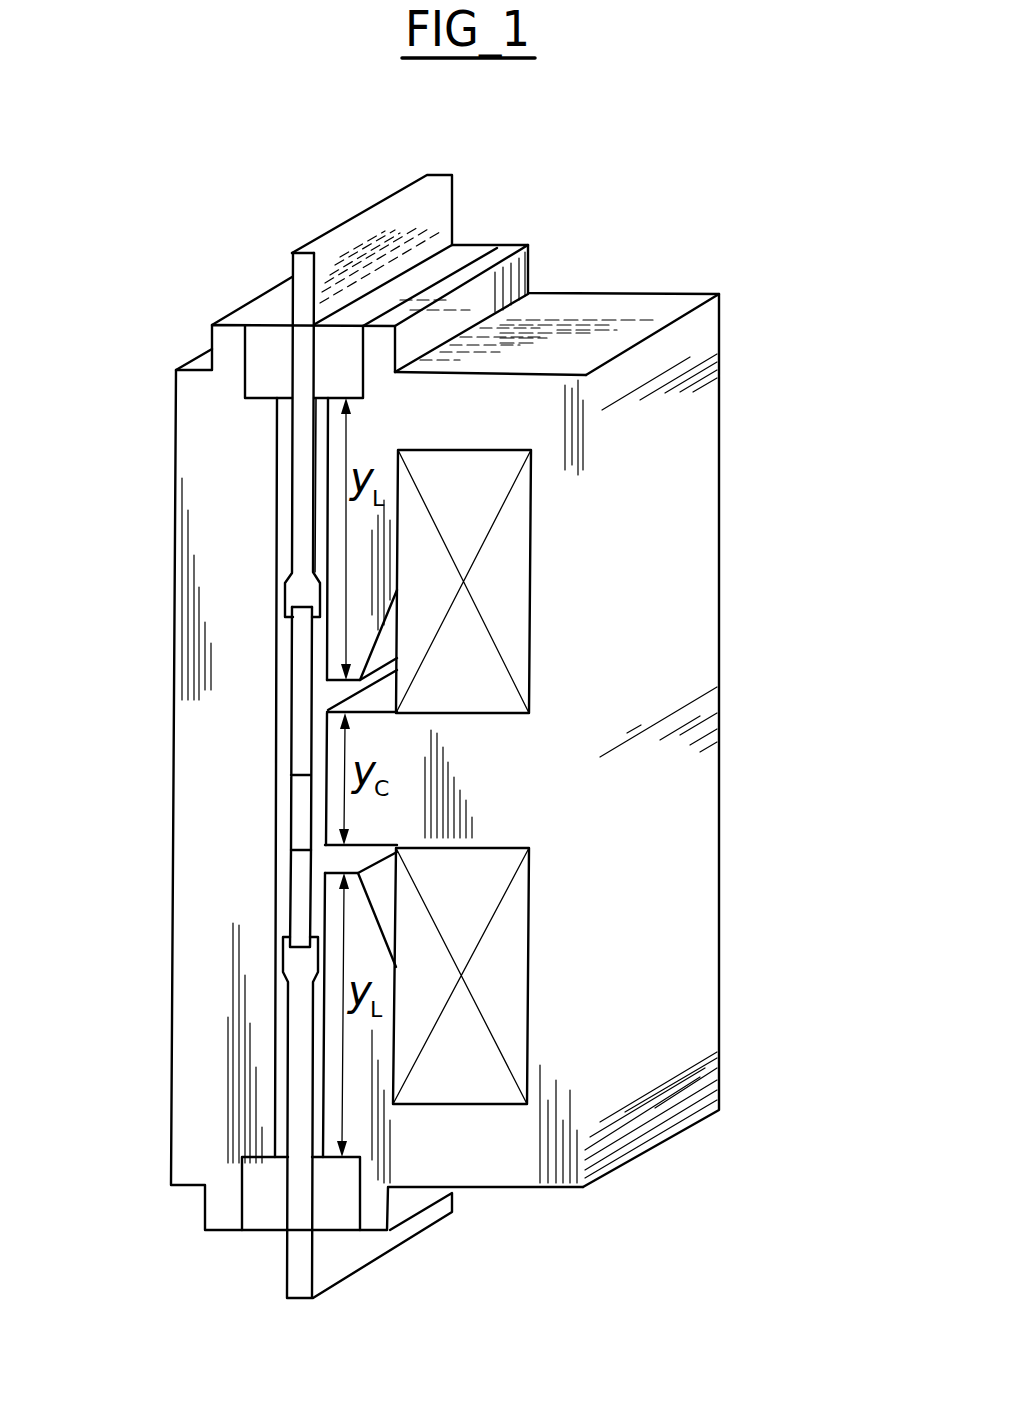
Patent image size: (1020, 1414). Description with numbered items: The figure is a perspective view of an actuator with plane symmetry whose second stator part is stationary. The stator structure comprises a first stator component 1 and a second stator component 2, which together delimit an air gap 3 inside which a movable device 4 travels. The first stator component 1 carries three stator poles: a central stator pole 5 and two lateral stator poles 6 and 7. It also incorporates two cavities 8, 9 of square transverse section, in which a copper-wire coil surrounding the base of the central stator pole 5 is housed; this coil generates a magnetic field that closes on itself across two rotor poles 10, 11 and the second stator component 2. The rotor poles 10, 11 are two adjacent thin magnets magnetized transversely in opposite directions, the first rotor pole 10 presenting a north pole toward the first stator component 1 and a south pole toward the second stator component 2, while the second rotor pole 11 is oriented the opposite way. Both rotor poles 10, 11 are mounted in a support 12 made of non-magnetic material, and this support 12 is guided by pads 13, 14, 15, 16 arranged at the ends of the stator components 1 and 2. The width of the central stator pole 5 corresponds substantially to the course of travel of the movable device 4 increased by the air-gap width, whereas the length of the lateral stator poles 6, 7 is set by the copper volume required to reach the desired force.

The first stator component 1 is at (668, 488).
The second stator component 2 is at (200, 797).
The air gap 3 is at (276, 541).
The movable device 4 is at (300, 1270).
The central stator pole 5 is at (450, 767).
The lateral stator pole 6 is at (360, 562).
The lateral stator pole 7 is at (383, 1065).
The cavity 8 is at (497, 475).
The cavity 9 is at (495, 978).
The first rotor pole 10 is at (300, 680).
The second rotor pole 11 is at (297, 883).
The support 12 is at (297, 1082).
The pad 13 is at (273, 1205).
The pad 14 is at (340, 1207).
The pad 15 is at (340, 357).
The pad 16 is at (267, 353).